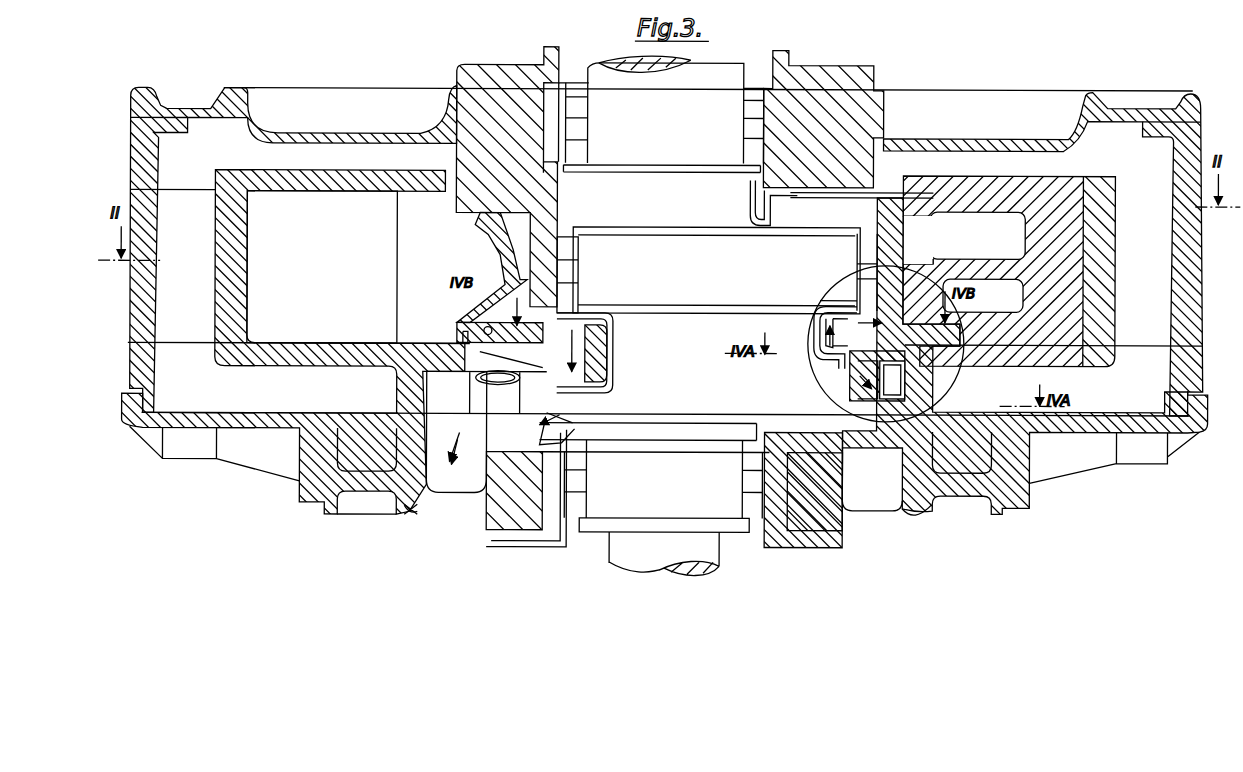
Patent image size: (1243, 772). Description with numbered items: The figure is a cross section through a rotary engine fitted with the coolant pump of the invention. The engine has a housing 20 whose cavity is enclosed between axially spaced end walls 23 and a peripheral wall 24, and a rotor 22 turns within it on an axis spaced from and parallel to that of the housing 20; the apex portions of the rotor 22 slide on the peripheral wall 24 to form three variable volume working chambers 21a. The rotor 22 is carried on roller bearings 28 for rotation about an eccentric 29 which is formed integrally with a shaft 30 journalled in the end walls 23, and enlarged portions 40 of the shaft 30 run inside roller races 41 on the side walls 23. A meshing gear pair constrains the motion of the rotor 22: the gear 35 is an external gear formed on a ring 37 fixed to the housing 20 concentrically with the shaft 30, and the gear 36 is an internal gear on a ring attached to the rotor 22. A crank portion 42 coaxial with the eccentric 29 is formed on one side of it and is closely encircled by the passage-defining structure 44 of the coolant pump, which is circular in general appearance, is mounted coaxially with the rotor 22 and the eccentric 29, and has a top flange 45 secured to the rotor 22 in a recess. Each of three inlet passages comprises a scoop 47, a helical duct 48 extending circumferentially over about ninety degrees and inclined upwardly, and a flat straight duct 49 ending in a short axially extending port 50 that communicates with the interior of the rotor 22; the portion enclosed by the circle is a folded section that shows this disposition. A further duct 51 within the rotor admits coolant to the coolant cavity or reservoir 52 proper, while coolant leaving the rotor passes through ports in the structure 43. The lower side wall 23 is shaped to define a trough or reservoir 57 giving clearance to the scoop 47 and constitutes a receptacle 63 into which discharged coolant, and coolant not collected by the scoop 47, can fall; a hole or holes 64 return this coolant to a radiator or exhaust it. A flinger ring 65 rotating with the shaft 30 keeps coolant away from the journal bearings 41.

The housing 20 is at (1201, 152).
The working chambers 21a is at (322, 267).
The rotor 22 is at (1058, 238).
The end walls 23 is at (852, 125).
The peripheral wall 24 is at (247, 272).
The roller bearings 28 is at (570, 272).
The eccentric 29 is at (716, 270).
The shaft 30 is at (675, 551).
The gear 35 is at (768, 211).
The gear 36 is at (865, 196).
The ring 37 is at (552, 153).
The enlarged portions of the shaft 40 is at (720, 70).
The roller races 41 is at (580, 110).
The crank portion 42 is at (797, 393).
The structure 43 is at (480, 332).
The passage-defining structure 44 is at (500, 310).
The top flange 45 is at (932, 315).
The scoop 47 is at (872, 395).
The helical duct 48 is at (812, 355).
The straight duct 49 is at (818, 340).
The port 50 is at (870, 300).
The further duct 51 is at (908, 270).
The coolant cavity 52 is at (977, 235).
The trough 57 is at (898, 402).
The receptacle 63 is at (455, 500).
The hole 64 is at (412, 505).
The flinger ring 65 is at (757, 424).